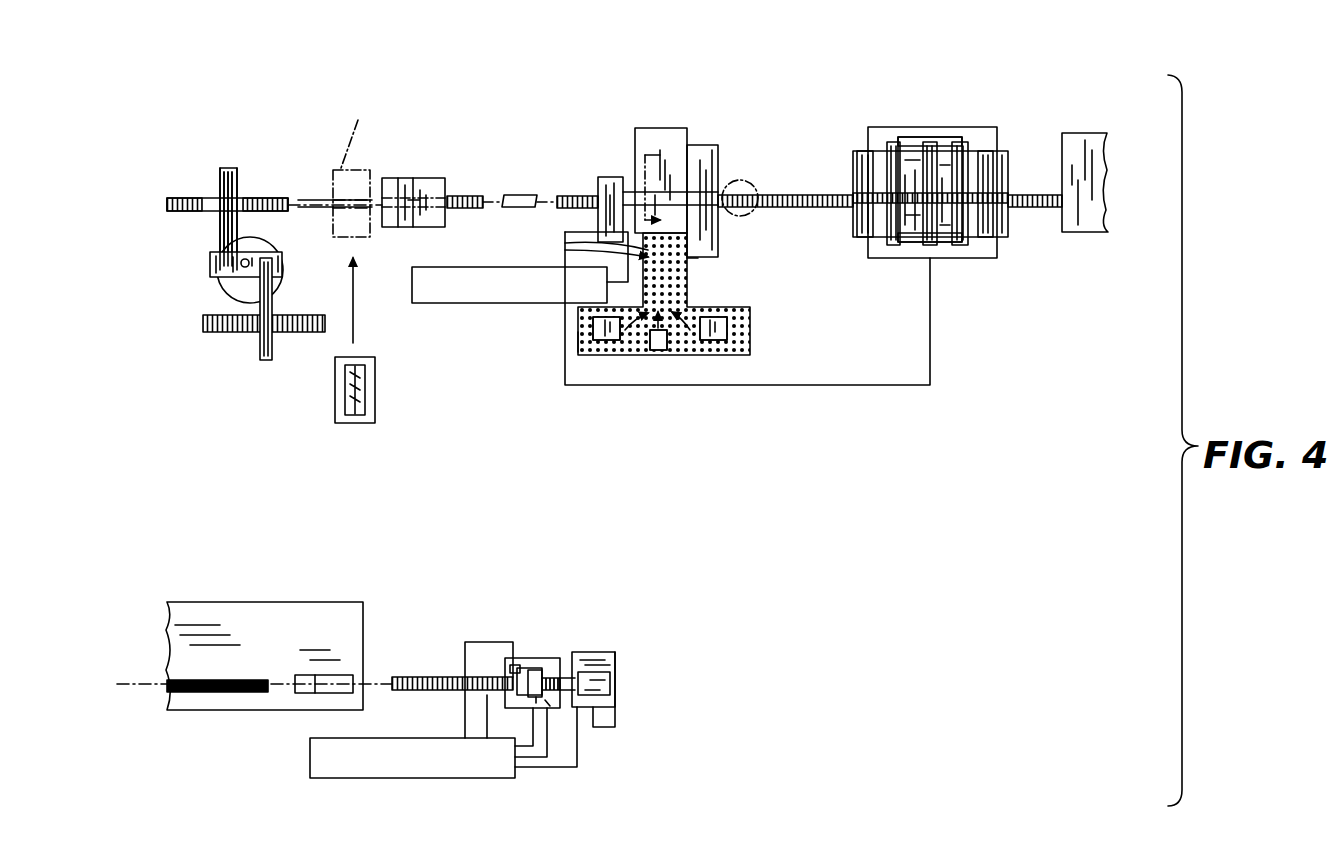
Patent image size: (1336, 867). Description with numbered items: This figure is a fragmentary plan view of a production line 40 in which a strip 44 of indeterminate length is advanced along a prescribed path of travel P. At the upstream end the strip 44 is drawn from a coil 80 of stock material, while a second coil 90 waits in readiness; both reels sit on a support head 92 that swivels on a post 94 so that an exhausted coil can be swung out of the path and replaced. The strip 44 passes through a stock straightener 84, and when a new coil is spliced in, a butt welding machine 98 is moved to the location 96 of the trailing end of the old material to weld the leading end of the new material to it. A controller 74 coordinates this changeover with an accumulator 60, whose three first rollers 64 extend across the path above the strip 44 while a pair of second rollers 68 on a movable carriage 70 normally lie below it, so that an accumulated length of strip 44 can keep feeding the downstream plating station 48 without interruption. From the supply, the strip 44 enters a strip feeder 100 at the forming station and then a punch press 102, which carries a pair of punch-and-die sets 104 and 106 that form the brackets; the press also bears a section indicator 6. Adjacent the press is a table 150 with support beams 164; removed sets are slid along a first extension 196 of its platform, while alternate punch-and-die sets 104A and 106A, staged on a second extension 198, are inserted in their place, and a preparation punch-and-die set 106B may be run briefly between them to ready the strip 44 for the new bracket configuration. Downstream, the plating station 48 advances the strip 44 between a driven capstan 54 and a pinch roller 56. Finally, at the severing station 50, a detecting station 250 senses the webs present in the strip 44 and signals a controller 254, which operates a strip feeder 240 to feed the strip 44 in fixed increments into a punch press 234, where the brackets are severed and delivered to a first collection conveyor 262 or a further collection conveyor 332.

The production line 40 is at (495, 178).
The strip 44 is at (357, 214).
The plating station 48 is at (1078, 150).
The severing station 50 is at (557, 713).
The driven capstan 54 is at (335, 675).
The pinch roller 56 is at (305, 675).
The accumulator 60 is at (870, 127).
The first rollers 64 is at (858, 151).
The second rollers 68 is at (895, 240).
The carriage 70 is at (920, 138).
The controller 74 is at (432, 267).
The coil 80 is at (167, 205).
The stock straightener 84 is at (421, 192).
The second coil 90 is at (203, 323).
The support head 92 is at (210, 264).
The post 94 is at (232, 287).
The trailing end location 96 is at (360, 196).
The butt welding machine 98 is at (345, 392).
The strip feeder 100 is at (607, 178).
The punch press 102 is at (648, 128).
The punch-and-die set 104 is at (593, 327).
The alternate punch-and-die set 104A is at (728, 342).
The punch-and-die set 106 is at (592, 336).
The alternate punch-and-die set 106A is at (722, 331).
The preparation punch-and-die set 106B is at (657, 352).
The table 150 is at (698, 290).
The support beams 164 is at (565, 249).
The first extension 196 is at (580, 345).
The second extension 198 is at (722, 358).
The punch press 234 is at (617, 674).
The strip feeder 240 is at (538, 668).
The detecting station 250 is at (516, 664).
The controller 254 is at (405, 778).
The first collection conveyor 262 is at (620, 705).
The further collection conveyor 332 is at (615, 727).
The section line 6 is at (661, 187).
The path of travel P is at (313, 197).